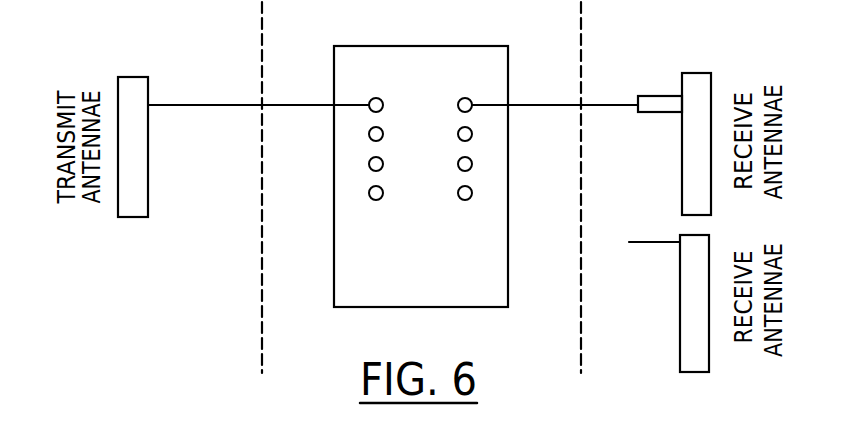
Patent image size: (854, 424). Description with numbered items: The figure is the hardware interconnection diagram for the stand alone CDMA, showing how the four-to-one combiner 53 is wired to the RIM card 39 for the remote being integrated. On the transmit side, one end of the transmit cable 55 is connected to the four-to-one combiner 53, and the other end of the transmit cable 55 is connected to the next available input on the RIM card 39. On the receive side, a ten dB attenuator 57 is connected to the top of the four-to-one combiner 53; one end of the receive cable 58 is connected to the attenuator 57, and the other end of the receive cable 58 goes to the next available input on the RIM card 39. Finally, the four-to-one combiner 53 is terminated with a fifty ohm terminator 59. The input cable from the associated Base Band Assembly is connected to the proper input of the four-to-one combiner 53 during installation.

The RIM card 39 is at (410, 307).
The 4:1 combiner 53 is at (148, 201).
The transmit cable 55 is at (197, 104).
The 10 dB attenuator 57 is at (652, 100).
The receive cable 58 is at (532, 104).
The 50 Ω terminator 59 is at (666, 243).